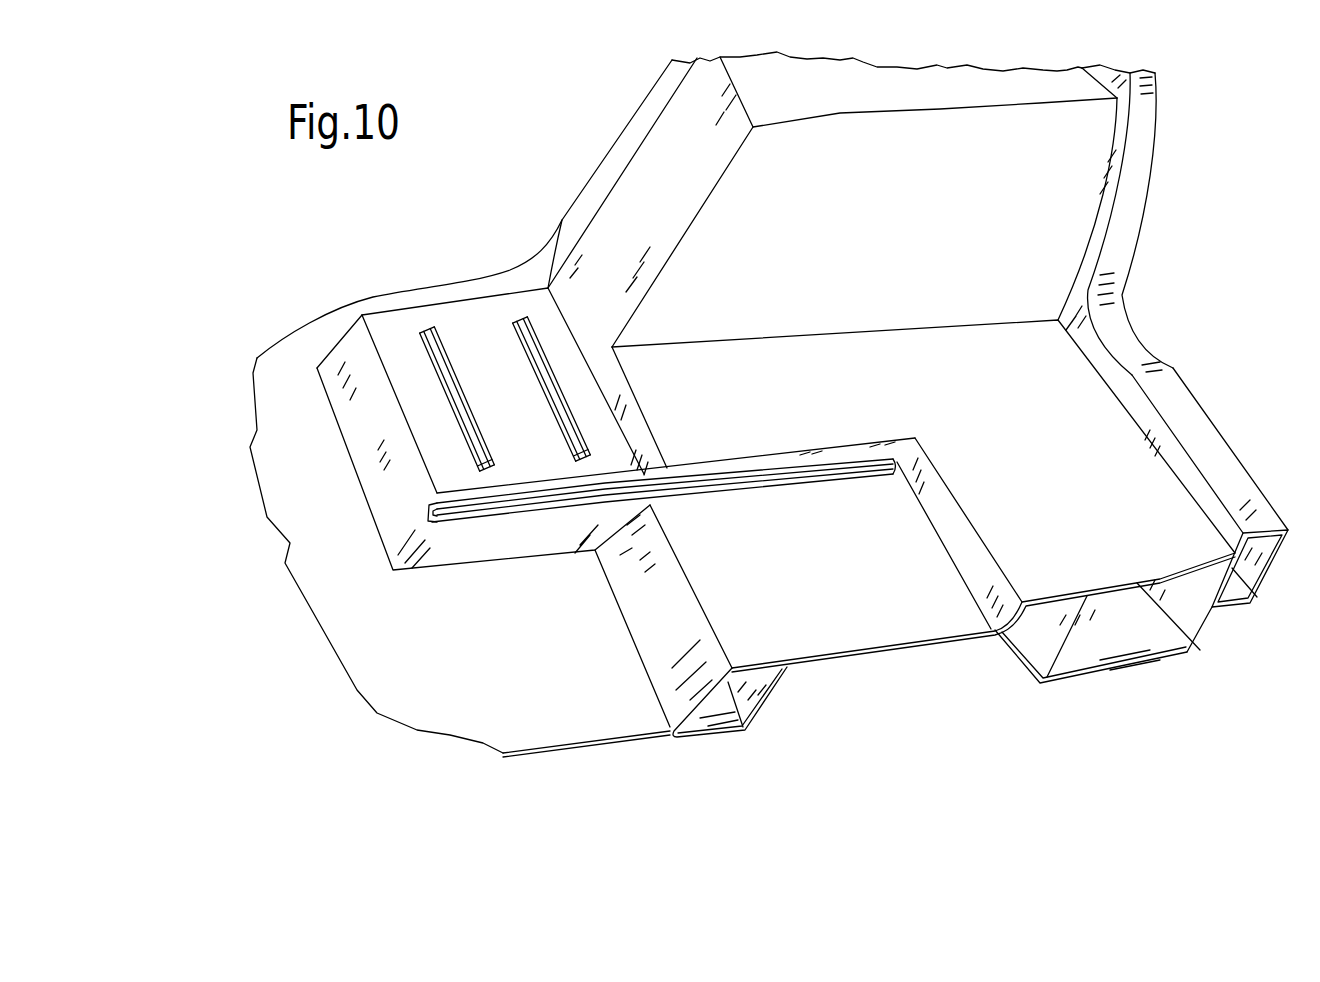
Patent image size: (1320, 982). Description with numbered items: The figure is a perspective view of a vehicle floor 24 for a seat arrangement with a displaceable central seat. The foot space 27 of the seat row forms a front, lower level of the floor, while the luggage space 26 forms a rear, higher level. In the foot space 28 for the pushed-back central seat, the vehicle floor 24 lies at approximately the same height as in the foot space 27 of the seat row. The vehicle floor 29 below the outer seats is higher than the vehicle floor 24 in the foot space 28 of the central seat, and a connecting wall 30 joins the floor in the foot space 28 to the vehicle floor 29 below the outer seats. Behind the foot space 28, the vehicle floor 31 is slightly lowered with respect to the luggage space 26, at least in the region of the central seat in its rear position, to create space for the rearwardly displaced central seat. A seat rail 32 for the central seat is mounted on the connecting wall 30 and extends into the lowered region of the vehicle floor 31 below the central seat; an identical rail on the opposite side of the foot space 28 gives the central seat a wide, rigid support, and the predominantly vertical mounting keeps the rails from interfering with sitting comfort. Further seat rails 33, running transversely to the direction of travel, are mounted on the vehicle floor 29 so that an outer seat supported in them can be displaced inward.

The vehicle floor 24 is at (424, 744).
The luggage space 26 is at (1093, 443).
The foot space 27 is at (288, 424).
The foot space 28 is at (523, 637).
The vehicle floor below the outer seats 29 is at (470, 325).
The connecting wall 30 is at (440, 560).
The vehicle floor 31 is at (878, 617).
The seat rail 32 is at (430, 512).
The seat rails 33 is at (432, 337).